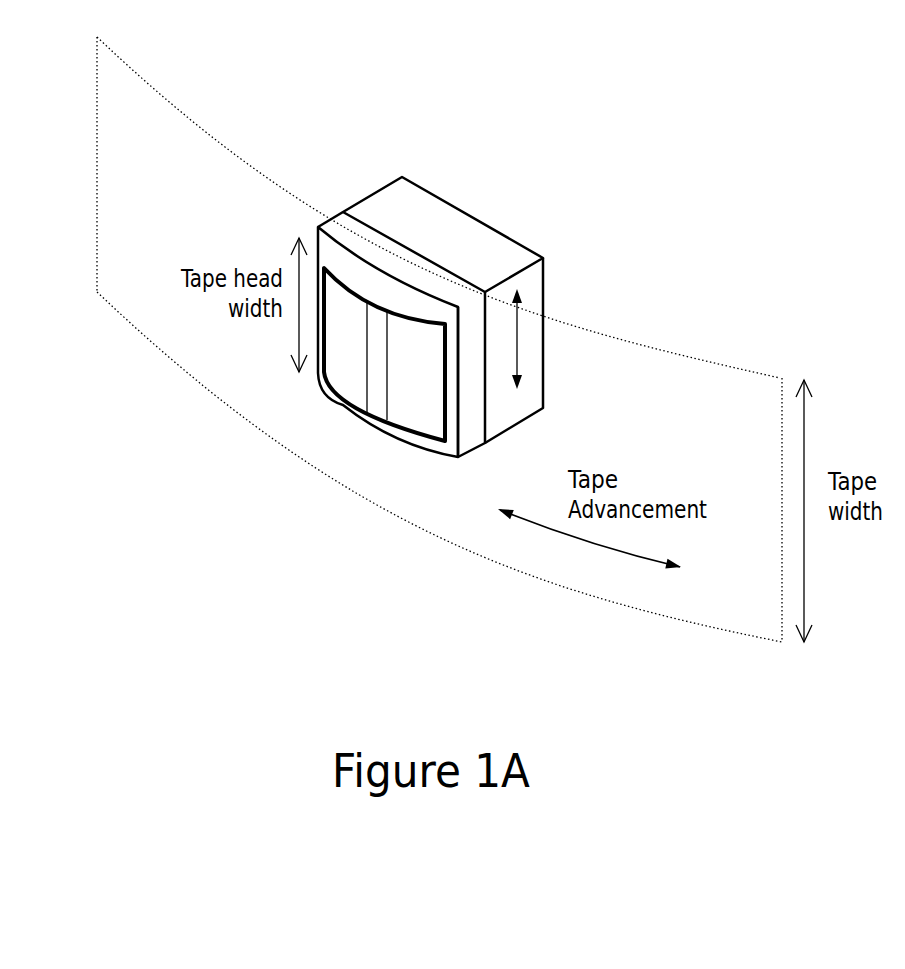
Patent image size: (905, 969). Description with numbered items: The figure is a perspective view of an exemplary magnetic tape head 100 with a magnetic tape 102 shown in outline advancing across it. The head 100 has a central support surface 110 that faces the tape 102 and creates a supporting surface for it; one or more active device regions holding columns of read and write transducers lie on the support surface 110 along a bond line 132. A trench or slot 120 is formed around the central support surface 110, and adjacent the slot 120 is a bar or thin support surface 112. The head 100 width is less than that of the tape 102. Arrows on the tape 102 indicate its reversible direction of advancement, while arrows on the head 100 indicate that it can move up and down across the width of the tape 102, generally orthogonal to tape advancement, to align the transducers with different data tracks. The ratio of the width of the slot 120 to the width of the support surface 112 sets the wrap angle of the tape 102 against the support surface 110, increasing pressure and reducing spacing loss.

The magnetic tape head 100 is at (410, 266).
The magnetic tape 102 is at (653, 406).
The support surface 110 is at (343, 365).
The thin support surface 112 is at (453, 400).
The slot 120 is at (412, 428).
The bond line 132 is at (389, 398).